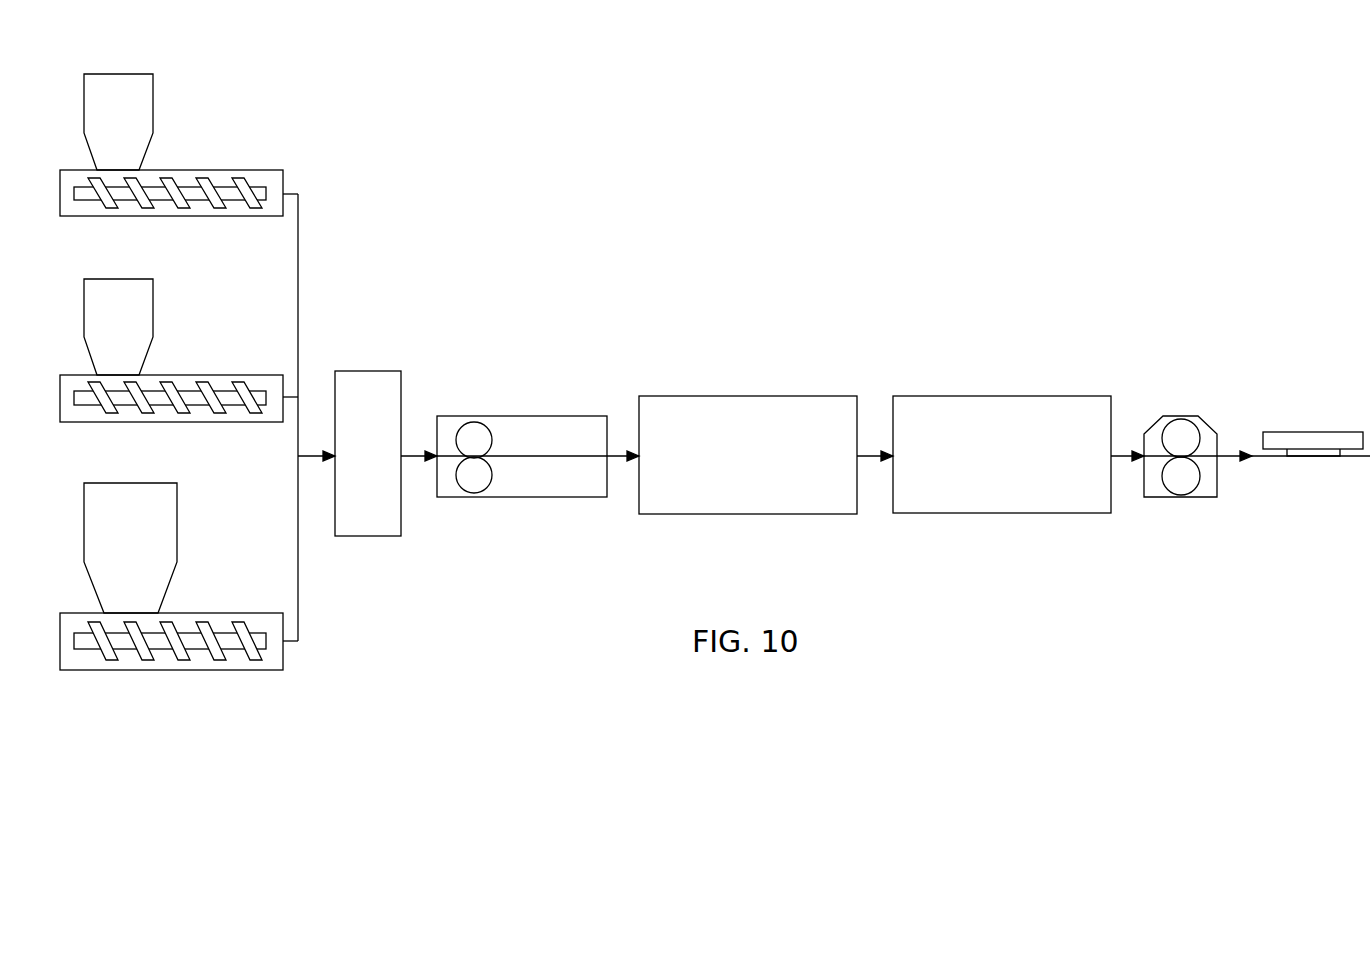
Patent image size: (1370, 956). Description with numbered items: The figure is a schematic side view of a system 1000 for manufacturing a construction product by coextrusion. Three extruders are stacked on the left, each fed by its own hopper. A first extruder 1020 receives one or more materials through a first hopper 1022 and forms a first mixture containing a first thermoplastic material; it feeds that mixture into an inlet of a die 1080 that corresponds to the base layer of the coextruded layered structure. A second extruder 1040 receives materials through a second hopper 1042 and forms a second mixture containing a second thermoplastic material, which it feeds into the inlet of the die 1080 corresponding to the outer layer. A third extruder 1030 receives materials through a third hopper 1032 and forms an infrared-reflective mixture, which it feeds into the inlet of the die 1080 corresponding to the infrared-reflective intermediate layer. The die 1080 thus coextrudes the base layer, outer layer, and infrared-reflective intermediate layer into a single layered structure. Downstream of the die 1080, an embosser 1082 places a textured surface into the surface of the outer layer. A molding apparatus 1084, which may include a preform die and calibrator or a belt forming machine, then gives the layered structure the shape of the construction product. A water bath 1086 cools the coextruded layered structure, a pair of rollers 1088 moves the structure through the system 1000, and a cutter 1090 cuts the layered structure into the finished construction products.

The system 1000 is at (946, 161).
The first extruder 1020 is at (219, 563).
The first hopper 1022 is at (177, 498).
The third extruder 1030 is at (201, 338).
The third hopper 1032 is at (153, 315).
The second extruder 1040 is at (276, 135).
The second hopper 1042 is at (153, 117).
The die 1080 is at (363, 371).
The embosser 1082 is at (521, 416).
The molding apparatus 1084 is at (706, 396).
The water bath 1086 is at (959, 396).
The pair of rollers 1088 is at (1182, 416).
The cutter 1090 is at (1290, 432).